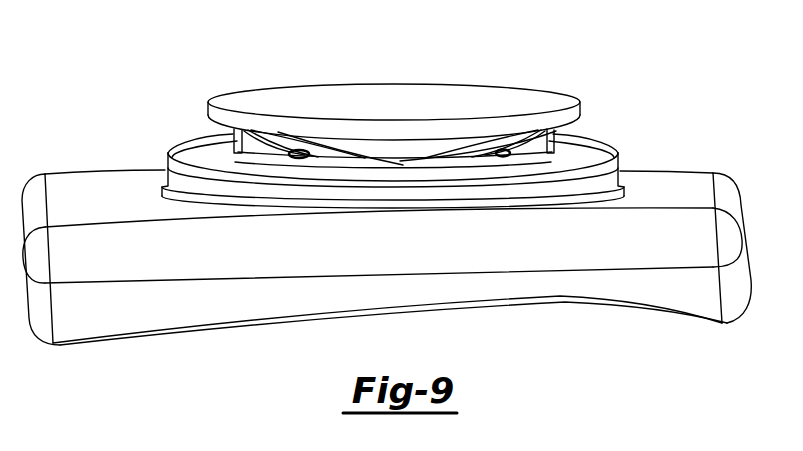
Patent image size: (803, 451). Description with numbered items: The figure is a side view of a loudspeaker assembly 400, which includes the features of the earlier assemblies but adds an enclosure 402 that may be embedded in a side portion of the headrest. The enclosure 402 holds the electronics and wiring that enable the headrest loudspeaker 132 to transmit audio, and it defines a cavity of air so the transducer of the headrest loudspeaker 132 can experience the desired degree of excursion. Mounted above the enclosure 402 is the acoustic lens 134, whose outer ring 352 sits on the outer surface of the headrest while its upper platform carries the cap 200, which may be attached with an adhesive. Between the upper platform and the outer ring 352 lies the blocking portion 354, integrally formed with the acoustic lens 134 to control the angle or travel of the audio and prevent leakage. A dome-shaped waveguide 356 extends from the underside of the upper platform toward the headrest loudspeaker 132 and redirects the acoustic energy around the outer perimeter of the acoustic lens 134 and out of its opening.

The loudspeaker assembly 400 is at (499, 62).
The enclosure 402 is at (658, 183).
The cap 200 is at (290, 103).
The outer ring 352 is at (200, 146).
The blocking portion 354 is at (232, 133).
The acoustic lens 134 is at (560, 136).
The headrest loudspeaker 132 is at (312, 153).
The waveguide 356 is at (406, 151).